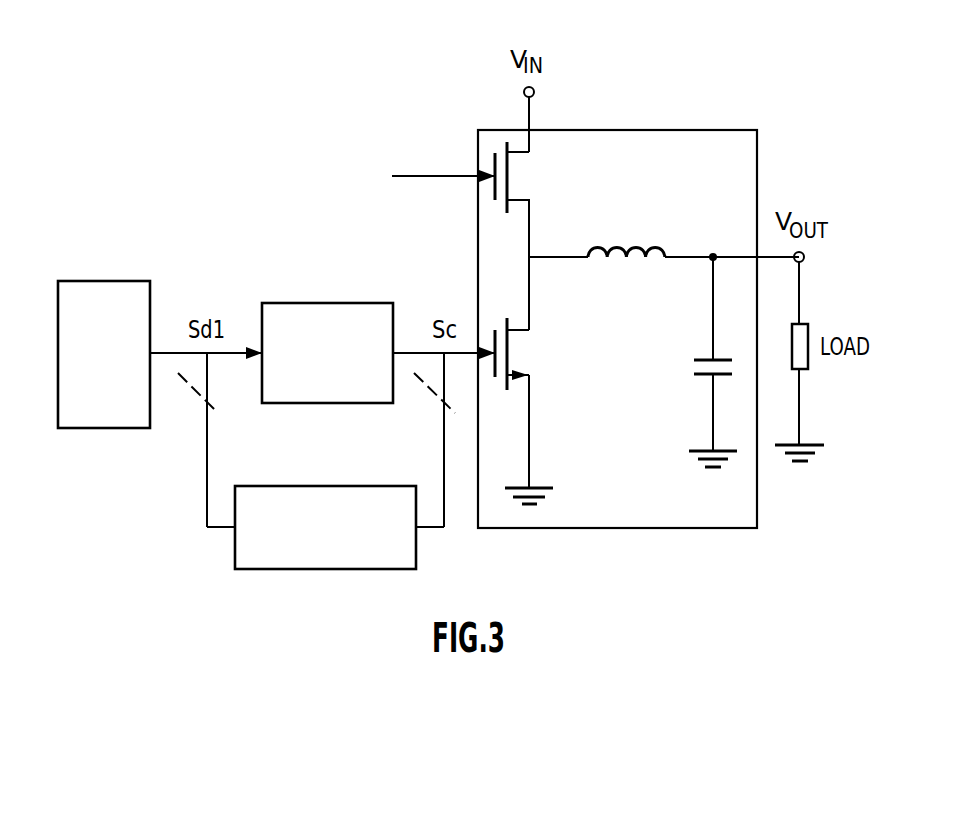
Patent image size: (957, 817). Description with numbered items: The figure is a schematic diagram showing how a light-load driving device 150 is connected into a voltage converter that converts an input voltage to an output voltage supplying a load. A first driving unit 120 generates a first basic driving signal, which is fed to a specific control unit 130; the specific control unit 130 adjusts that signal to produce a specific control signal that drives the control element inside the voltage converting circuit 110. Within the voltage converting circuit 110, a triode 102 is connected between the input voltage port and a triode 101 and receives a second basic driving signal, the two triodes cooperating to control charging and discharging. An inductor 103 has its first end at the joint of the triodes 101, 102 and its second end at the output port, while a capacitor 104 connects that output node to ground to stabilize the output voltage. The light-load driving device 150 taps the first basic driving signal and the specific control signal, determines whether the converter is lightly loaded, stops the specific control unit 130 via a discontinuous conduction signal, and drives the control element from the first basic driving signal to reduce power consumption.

The triode 101 is at (538, 380).
The triode 102 is at (487, 198).
The inductor 103 is at (664, 238).
The capacitor 104 is at (692, 360).
The voltage converting circuit 110 is at (625, 130).
The first driving unit 120 is at (113, 281).
The specific control unit 130 is at (337, 303).
The light-load driving device 150 is at (334, 486).